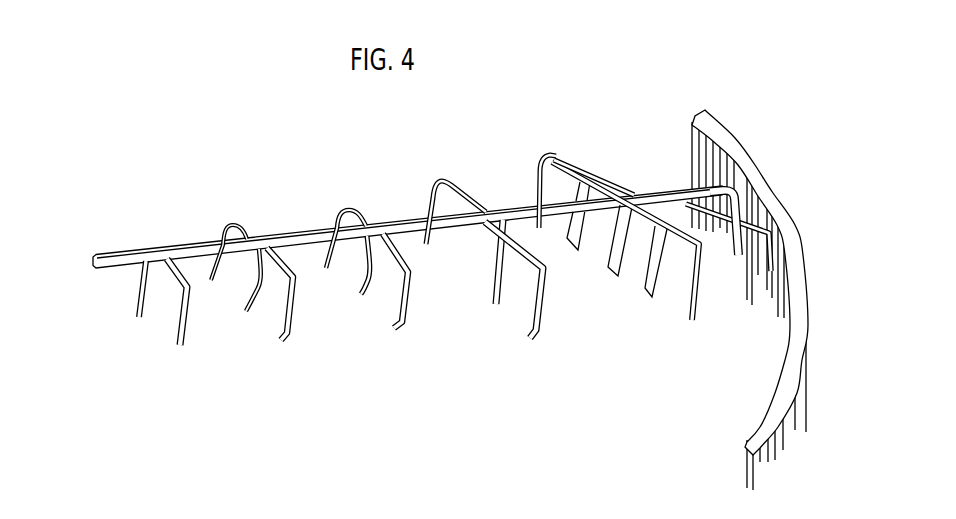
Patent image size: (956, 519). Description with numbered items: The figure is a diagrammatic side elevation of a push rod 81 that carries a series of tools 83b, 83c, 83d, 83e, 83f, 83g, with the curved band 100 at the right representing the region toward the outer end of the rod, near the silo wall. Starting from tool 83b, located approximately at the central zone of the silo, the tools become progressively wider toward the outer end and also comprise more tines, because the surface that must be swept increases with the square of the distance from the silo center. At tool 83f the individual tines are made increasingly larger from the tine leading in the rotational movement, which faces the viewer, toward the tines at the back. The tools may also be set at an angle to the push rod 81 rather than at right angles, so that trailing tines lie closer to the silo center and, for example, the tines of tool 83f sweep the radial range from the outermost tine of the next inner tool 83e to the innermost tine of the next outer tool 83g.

The push rod 81 is at (312, 232).
The curved support rail 100 is at (713, 142).
The tool 83b is at (173, 339).
The tool 83c is at (282, 342).
The tool 83d is at (400, 332).
The tool 83e is at (528, 336).
The tool 83f is at (686, 320).
The tool 83g is at (768, 272).